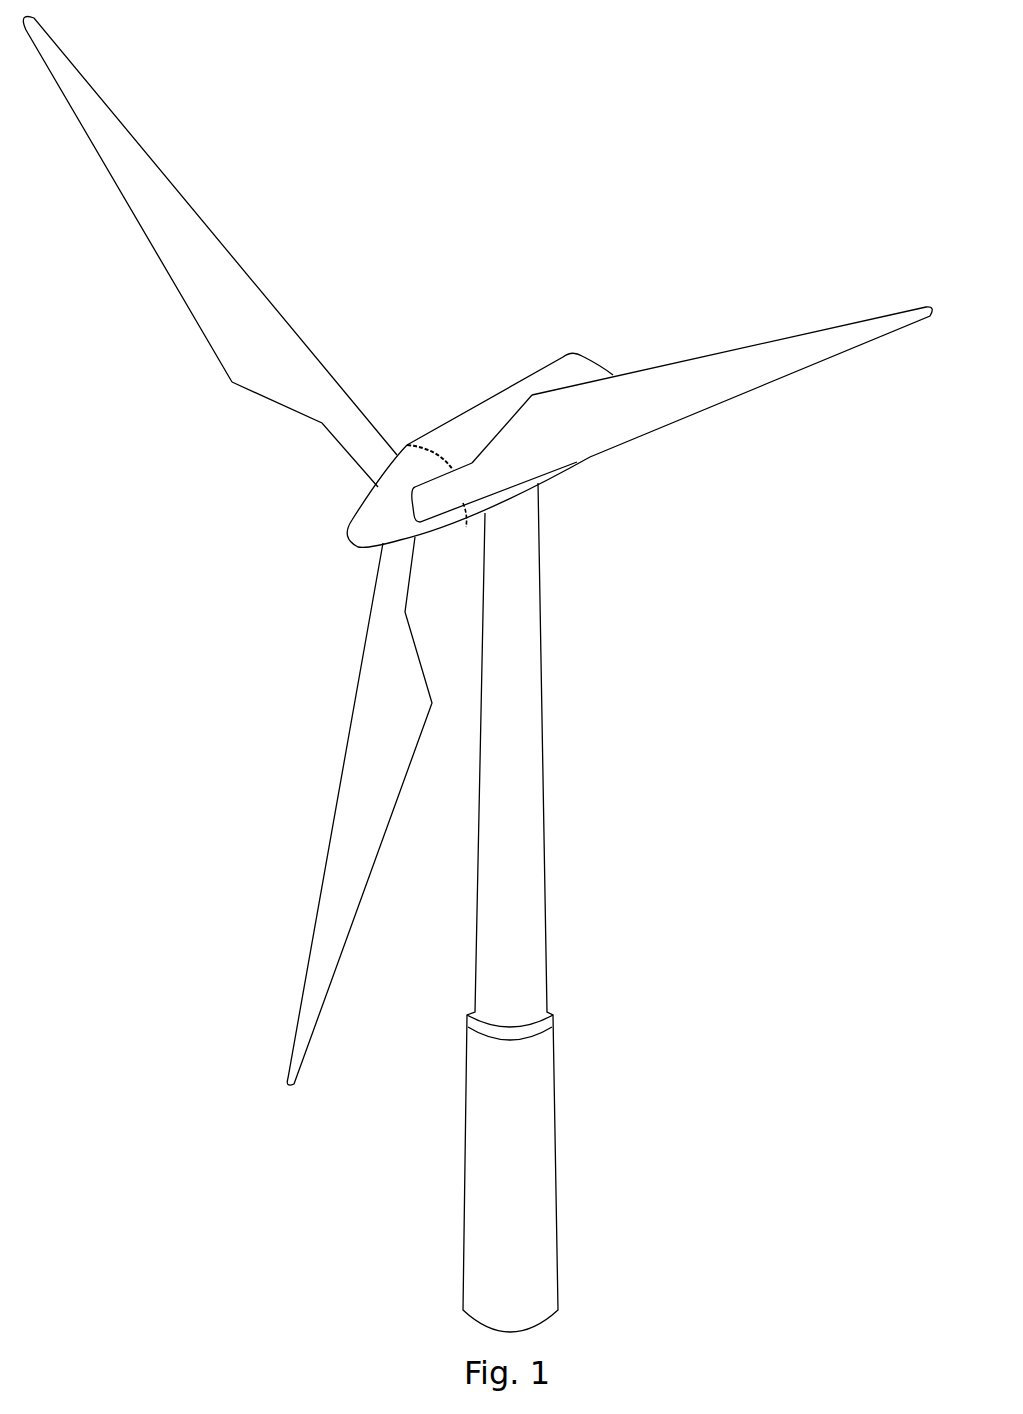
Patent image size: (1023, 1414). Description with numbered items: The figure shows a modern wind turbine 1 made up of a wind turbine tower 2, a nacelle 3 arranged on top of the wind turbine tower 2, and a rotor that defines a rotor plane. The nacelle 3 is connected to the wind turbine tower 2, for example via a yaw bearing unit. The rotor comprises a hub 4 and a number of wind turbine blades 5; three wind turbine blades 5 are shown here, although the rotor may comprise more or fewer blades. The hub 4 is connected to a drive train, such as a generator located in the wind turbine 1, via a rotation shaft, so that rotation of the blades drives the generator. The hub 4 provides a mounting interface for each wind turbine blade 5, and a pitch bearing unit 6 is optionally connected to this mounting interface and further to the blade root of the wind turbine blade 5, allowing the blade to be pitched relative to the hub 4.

The wind turbine 1 is at (650, 838).
The wind turbine tower 2 is at (531, 753).
The nacelle 3 is at (470, 422).
The hub 4 is at (370, 515).
The wind turbine blade 5 is at (245, 348).
The pitch bearing unit 6 is at (415, 528).